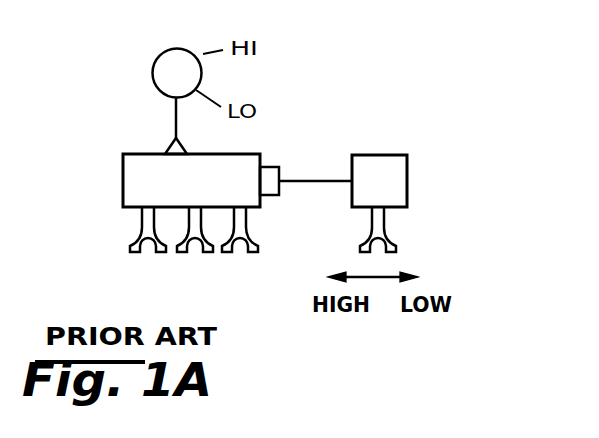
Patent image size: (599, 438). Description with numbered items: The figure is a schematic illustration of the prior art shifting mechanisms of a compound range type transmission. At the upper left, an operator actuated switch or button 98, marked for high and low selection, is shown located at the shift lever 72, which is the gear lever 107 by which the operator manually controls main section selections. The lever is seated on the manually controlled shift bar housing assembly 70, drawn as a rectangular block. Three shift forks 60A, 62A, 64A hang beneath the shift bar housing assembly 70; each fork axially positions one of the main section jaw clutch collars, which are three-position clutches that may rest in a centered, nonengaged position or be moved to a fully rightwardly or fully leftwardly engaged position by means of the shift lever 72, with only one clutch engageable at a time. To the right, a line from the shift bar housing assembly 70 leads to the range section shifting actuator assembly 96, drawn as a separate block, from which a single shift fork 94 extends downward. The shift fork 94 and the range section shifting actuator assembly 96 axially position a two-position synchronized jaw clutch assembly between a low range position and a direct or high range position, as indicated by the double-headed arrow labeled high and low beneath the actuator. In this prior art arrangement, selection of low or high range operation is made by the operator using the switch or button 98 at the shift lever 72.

The operator actuated switch or button 98 is at (200, 57).
The gear lever 107 is at (114, 126).
The shift lever 72 is at (176, 131).
The shift bar housing assembly 70 is at (154, 180).
The shift fork 60A is at (140, 220).
The shift fork 62A is at (213, 234).
The shift fork 64A is at (258, 224).
The range section shifting actuator assembly 96 is at (390, 155).
The shift fork 94 is at (385, 222).